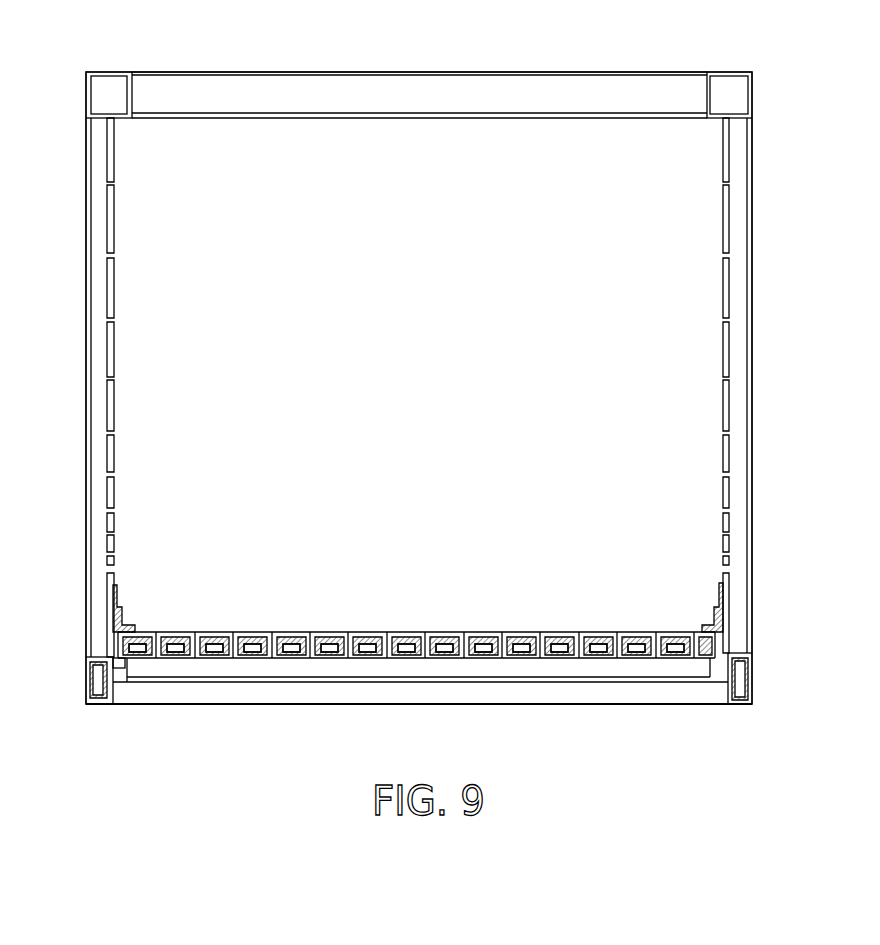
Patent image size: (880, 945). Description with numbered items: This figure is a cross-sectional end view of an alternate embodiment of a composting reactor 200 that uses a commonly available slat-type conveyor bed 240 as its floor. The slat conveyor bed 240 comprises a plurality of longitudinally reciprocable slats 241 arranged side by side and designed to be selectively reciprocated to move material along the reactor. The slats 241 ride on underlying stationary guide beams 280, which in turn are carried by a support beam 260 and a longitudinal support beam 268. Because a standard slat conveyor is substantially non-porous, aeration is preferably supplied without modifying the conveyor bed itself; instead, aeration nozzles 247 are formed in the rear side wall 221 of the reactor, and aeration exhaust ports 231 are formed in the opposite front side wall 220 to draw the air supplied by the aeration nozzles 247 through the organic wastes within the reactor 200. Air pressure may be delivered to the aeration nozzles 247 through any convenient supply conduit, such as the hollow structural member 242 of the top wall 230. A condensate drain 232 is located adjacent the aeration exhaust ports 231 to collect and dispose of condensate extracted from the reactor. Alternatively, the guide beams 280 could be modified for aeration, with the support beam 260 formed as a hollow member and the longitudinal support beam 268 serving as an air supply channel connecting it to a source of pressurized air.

The composting reactor 200 is at (243, 58).
The front side wall 220 is at (738, 338).
The rear side wall 221 is at (100, 314).
The top wall 230 is at (464, 88).
The aeration exhaust ports 231 is at (723, 252).
The condensate drain 232 is at (743, 637).
The slat conveyor bed 240 is at (363, 626).
The reciprocable slats 241 is at (292, 636).
The hollow structural member 242 is at (110, 95).
The aeration nozzles 247 is at (113, 252).
The support beam 260 is at (120, 670).
The longitudinal support beam 268 is at (85, 672).
The stationary guide beams 280 is at (283, 657).